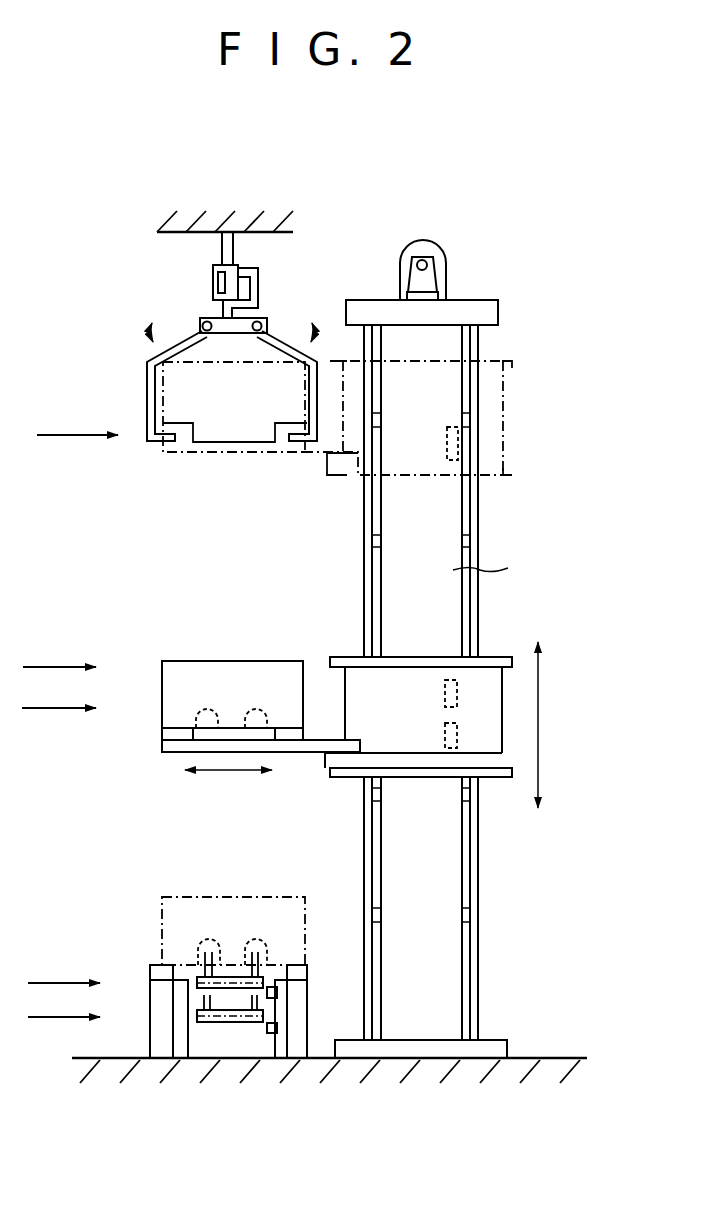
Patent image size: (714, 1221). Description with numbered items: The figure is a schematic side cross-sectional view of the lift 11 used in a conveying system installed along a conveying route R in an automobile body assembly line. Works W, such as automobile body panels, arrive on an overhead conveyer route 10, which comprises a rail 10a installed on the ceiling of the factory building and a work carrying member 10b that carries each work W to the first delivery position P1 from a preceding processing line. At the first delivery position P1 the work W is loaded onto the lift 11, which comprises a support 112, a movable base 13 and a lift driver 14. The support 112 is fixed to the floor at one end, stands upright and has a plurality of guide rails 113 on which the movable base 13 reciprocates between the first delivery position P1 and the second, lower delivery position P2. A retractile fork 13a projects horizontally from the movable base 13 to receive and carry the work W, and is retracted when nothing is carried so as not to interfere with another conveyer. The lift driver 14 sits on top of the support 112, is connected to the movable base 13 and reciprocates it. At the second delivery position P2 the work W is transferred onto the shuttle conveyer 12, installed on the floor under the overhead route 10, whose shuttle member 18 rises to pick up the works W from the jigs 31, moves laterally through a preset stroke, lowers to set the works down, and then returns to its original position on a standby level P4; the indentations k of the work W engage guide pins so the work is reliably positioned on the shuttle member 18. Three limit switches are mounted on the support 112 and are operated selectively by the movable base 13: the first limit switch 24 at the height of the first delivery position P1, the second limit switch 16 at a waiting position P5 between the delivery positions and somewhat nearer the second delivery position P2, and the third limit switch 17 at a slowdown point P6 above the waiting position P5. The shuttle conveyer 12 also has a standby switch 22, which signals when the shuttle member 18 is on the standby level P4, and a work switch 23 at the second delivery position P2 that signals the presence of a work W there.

The overhead conveyer route 10 is at (250, 270).
The rail 10a is at (213, 279).
The work carrying member 10b is at (172, 322).
The lift 11 is at (450, 649).
The shuttle conveyer 12 is at (239, 996).
The movable base 13 is at (363, 709).
The retractile fork 13a is at (173, 753).
The lift driver 14 is at (452, 282).
The second limit switch 16 is at (457, 735).
The third limit switch 17 is at (457, 693).
The shuttle member 18 is at (227, 977).
The standby switch 22 is at (263, 1033).
The work switch 23 is at (278, 993).
The first limit switch 24 is at (453, 460).
The jig 31 is at (150, 1040).
The support 112 is at (502, 569).
The guide rails 113 is at (364, 526).
The work W is at (238, 670).
The indentations k is at (197, 712).
The conveying route R is at (227, 1047).
The first delivery position P1 is at (78, 433).
The second delivery position P2 is at (54, 981).
The standby level P4 is at (50, 1019).
The waiting position P5 is at (55, 710).
The slowdown point P6 is at (58, 665).